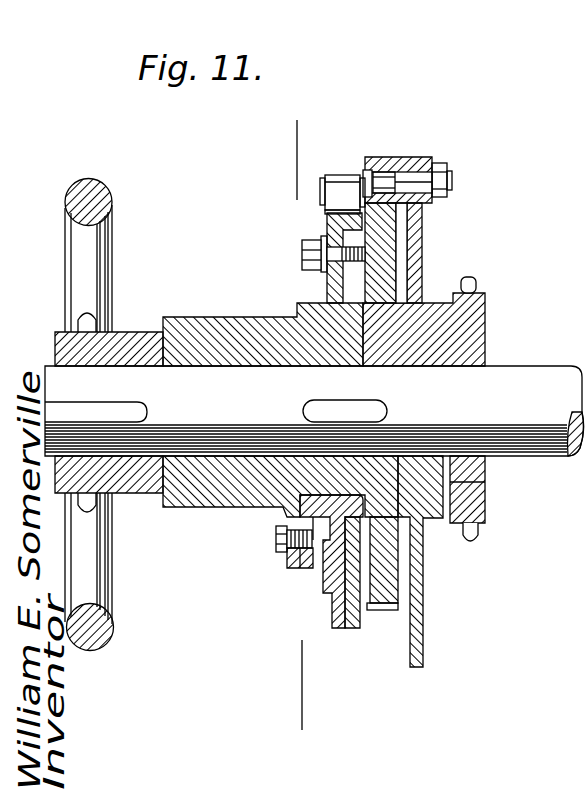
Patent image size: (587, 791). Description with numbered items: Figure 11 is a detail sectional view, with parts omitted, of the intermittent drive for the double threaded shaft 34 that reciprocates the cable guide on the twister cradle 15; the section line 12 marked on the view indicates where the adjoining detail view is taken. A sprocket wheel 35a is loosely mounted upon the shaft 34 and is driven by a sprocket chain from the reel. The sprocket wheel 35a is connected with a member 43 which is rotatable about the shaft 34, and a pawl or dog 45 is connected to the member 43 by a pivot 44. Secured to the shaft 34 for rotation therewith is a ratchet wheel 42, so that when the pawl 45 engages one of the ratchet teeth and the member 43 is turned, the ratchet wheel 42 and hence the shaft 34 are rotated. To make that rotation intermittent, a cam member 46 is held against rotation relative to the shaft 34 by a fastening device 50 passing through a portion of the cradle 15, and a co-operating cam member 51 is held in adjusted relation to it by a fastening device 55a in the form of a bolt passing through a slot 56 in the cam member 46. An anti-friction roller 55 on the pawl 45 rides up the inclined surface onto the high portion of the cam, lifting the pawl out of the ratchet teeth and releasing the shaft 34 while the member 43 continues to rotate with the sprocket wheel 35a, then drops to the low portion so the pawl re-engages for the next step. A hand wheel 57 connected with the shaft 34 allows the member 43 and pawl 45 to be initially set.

The section line 12- 12 is at (306, 136).
The twister cradle 15 is at (253, 316).
The double threaded shaft 34 is at (540, 438).
The sprocket wheel 35a is at (473, 315).
The ratchet wheel 42 is at (386, 244).
The member 43 is at (420, 284).
The pivot 44 is at (400, 166).
The pawl or dog 45 is at (386, 178).
The cam member 46 is at (328, 214).
The fastening device 50 is at (277, 538).
The cam member 51 is at (424, 212).
The anti-friction roller 55 is at (336, 188).
The fastening device 55a is at (312, 256).
The slot 56 is at (327, 238).
The hand wheel 57 is at (112, 210).